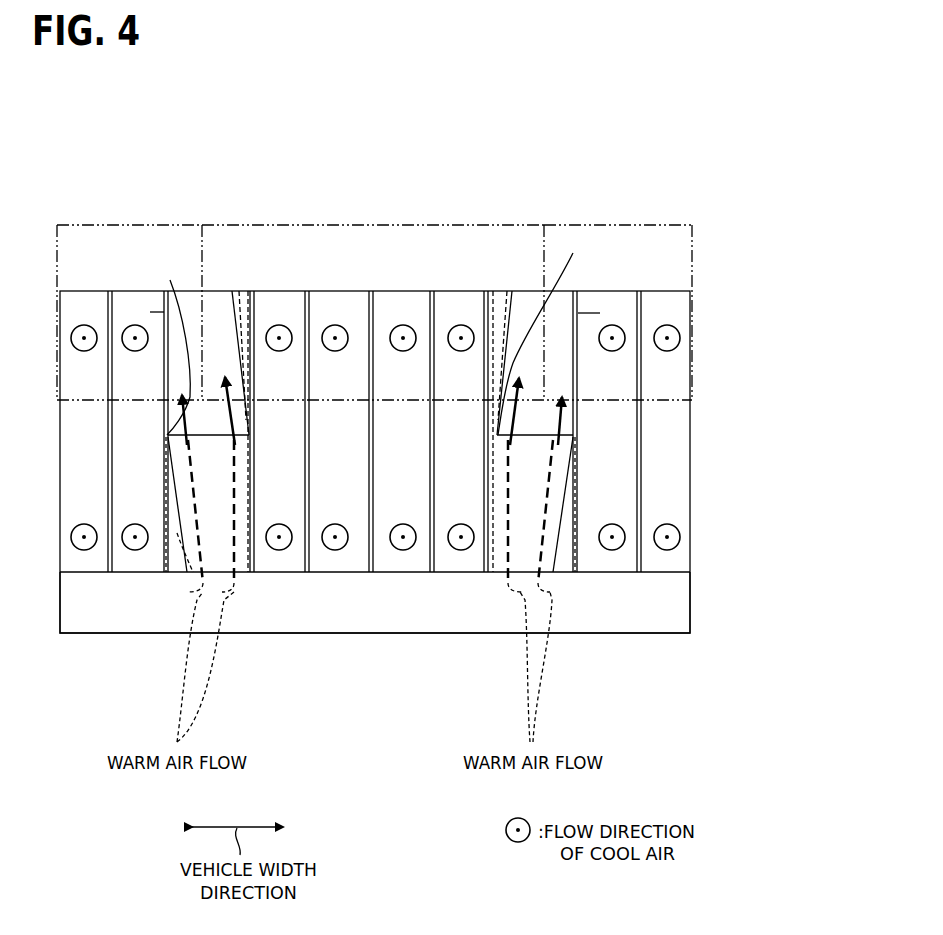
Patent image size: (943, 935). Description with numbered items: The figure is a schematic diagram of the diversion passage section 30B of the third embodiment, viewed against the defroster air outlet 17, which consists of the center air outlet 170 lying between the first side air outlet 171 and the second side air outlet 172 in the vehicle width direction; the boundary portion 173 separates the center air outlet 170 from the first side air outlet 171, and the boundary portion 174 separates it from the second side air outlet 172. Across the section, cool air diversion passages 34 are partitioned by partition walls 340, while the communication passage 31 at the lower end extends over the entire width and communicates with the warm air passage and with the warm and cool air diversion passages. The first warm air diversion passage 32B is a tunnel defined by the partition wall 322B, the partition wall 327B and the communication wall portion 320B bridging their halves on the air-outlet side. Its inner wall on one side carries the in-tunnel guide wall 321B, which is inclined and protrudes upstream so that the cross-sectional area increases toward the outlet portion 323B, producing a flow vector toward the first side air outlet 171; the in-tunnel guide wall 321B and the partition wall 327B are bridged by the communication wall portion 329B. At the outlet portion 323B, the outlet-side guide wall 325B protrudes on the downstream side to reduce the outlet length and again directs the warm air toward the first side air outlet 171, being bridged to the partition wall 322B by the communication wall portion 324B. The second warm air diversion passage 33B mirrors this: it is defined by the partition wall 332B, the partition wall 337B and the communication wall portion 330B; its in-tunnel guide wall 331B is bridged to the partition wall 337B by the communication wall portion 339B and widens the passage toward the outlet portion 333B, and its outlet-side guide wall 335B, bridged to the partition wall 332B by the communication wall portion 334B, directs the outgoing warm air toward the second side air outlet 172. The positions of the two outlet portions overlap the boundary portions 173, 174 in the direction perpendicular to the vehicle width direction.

The defroster air outlet 17 is at (692, 224).
The center air outlet 170 is at (390, 225).
The first side air outlet 171 is at (83, 237).
The second side air outlet 172 is at (675, 225).
The boundary portion 173 is at (202, 260).
The boundary portion 174 is at (567, 225).
The diversion passage section 30B is at (702, 416).
The communication passage 31 is at (643, 620).
The cool air diversion passages 34 is at (80, 442).
The partition walls 340 is at (311, 294).
The first warm air diversion passage 32B is at (188, 497).
The second warm air diversion passage 33B is at (545, 492).
The communication wall portion 320B is at (242, 560).
The in-tunnel guide wall 321B is at (187, 592).
The partition wall 322B is at (250, 520).
The outlet portion 323B is at (170, 280).
The communication wall portion 324B is at (243, 300).
The outlet-side guide wall 325B is at (247, 330).
The partition wall 327B is at (150, 312).
The communication wall portion 329B is at (173, 572).
The communication wall portion 330B is at (498, 560).
The in-tunnel guide wall 331B is at (560, 593).
The partition wall 332B is at (483, 560).
The outlet portion 333B is at (573, 253).
The communication wall portion 334B is at (508, 292).
The outlet-side guide wall 335B is at (510, 320).
The partition wall 337B is at (600, 313).
The communication wall portion 339B is at (560, 560).